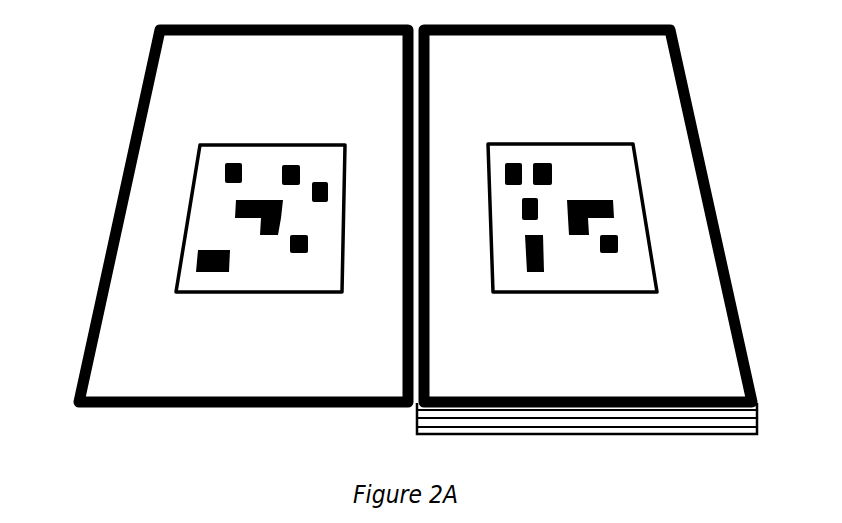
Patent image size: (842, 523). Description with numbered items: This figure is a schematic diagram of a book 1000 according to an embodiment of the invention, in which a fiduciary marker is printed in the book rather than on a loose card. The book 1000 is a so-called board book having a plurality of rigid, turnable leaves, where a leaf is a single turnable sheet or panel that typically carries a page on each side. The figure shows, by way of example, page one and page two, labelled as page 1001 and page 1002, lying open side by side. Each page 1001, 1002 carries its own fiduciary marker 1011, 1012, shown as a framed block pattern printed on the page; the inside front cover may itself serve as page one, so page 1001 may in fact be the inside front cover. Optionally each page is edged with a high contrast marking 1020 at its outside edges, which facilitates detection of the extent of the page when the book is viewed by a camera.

The book 1000 is at (420, 238).
The page 1001 is at (225, 216).
The page 1002 is at (610, 216).
The fiduciary marker 1011 is at (178, 181).
The fiduciary marker 1012 is at (657, 181).
The high contrast marking 1020 is at (699, 68).